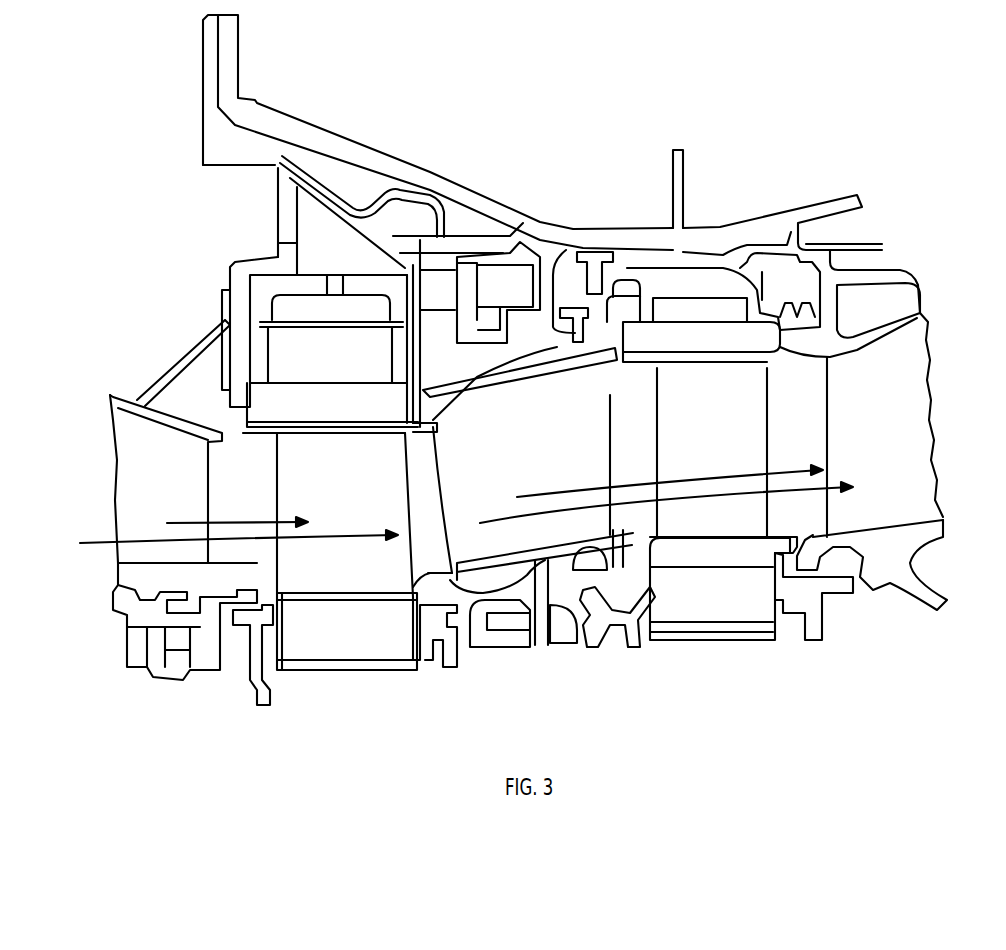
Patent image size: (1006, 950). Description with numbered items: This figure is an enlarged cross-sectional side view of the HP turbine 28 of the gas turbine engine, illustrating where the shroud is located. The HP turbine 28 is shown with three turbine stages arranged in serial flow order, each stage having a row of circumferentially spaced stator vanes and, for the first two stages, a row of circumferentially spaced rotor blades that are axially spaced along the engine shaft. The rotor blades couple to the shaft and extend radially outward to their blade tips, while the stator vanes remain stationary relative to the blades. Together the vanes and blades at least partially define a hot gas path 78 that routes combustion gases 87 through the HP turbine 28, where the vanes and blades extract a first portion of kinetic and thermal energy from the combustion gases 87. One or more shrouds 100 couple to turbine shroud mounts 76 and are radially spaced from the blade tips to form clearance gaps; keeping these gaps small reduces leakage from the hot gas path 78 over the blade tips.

The HP turbine 28 is at (527, 134).
The turbine shroud mount 76 is at (260, 358).
The hot gas path 78 is at (105, 540).
The combustion gases 87 is at (195, 520).
The shroud 100 is at (313, 400).